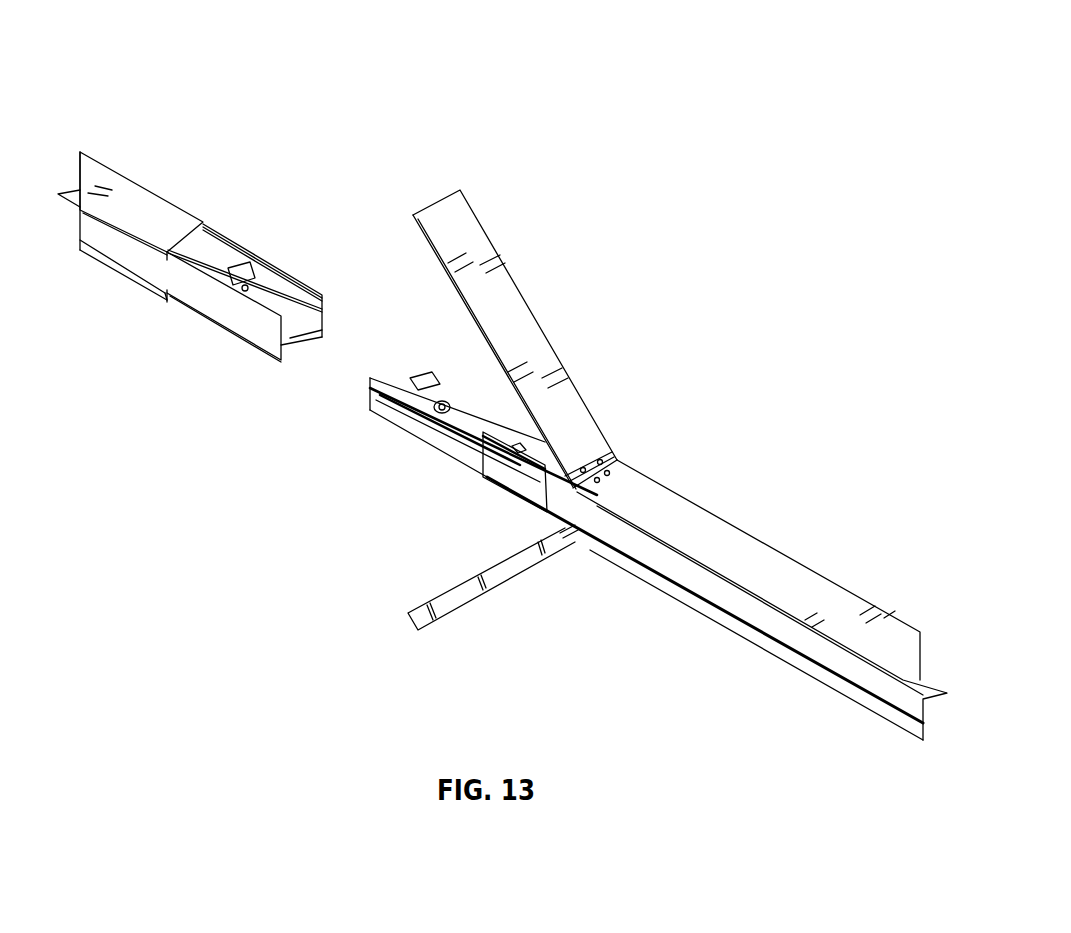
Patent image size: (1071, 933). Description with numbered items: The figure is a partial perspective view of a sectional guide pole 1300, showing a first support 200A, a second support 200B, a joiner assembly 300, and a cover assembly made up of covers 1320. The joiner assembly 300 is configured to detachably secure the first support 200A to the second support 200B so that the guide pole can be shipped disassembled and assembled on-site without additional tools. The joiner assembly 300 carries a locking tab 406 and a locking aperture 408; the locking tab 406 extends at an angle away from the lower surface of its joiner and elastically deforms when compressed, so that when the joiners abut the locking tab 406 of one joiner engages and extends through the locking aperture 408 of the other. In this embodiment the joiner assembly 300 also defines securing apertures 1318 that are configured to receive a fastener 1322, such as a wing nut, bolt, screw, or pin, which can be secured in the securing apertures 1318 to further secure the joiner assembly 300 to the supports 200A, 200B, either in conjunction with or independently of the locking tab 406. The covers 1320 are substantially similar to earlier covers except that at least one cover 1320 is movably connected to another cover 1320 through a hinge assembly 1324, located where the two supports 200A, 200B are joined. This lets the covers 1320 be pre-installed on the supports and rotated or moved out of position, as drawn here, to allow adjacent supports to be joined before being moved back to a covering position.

The sectional guide pole 1300 is at (150, 50).
The cover 1320 is at (489, 446).
The fastener 1322 is at (245, 288).
The second support 200B is at (231, 289).
The first support 200A is at (717, 600).
The joiner assembly 300 is at (444, 424).
The locking tab 406 is at (433, 380).
The locking aperture 408 is at (428, 412).
The securing aperture 1318 is at (518, 448).
The hinge assembly 1324 is at (612, 457).